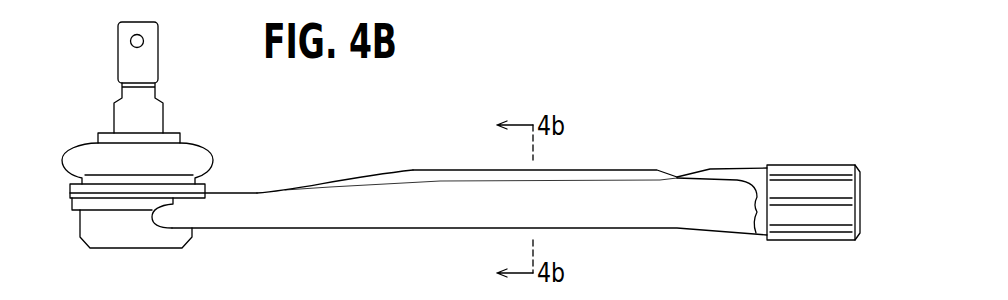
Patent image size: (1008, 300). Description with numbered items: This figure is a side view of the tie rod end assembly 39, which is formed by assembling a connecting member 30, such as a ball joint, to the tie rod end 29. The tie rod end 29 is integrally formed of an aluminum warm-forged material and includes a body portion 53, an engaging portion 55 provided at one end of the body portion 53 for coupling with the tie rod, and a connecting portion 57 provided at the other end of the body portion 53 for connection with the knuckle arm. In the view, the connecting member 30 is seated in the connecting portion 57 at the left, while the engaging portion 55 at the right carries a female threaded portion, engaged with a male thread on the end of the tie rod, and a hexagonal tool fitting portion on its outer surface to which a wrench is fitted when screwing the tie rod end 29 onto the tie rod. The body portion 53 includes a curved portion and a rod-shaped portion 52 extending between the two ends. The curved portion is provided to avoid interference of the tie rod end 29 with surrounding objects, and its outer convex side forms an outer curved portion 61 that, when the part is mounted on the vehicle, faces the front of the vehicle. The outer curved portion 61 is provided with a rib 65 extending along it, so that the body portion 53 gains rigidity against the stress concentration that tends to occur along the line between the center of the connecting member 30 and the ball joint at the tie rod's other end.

The connecting member 30 is at (187, 160).
The connecting portion 57 is at (137, 227).
The rod-shaped portion 52 is at (357, 208).
The body portion 53 is at (442, 198).
The outer curved portion 61 is at (455, 208).
The tie rod end 29 is at (598, 167).
The rib 65 is at (582, 178).
The tie rod end assembly 39 is at (688, 128).
The engaging portion 55 is at (813, 190).